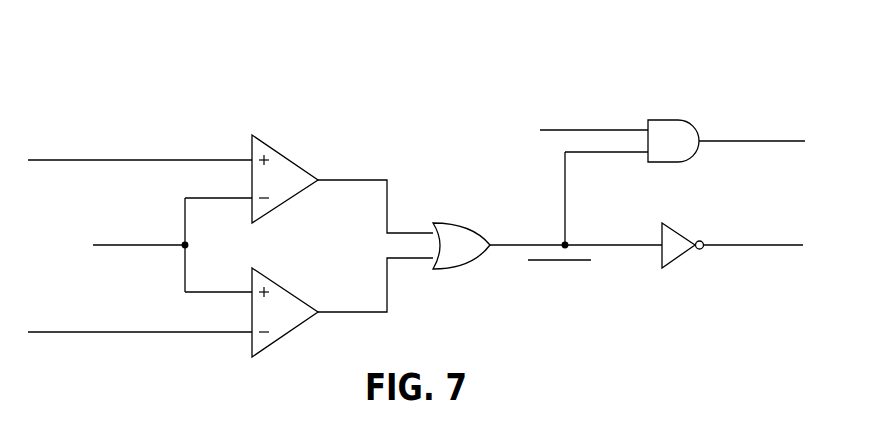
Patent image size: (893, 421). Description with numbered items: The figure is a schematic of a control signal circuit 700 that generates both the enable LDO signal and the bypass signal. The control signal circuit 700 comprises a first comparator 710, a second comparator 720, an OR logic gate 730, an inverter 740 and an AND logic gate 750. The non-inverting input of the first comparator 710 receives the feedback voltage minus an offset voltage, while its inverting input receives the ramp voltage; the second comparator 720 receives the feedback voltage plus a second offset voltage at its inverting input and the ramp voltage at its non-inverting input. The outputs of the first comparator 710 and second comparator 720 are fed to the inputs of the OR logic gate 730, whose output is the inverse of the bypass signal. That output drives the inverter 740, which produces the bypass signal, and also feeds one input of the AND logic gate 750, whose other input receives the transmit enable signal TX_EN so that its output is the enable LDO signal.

The control signal circuit 700 is at (724, 42).
The first comparator 710 is at (282, 152).
The second comparator 720 is at (282, 285).
The OR logic gate 730 is at (447, 222).
The inverter 740 is at (670, 228).
The AND logic gate 750 is at (666, 118).